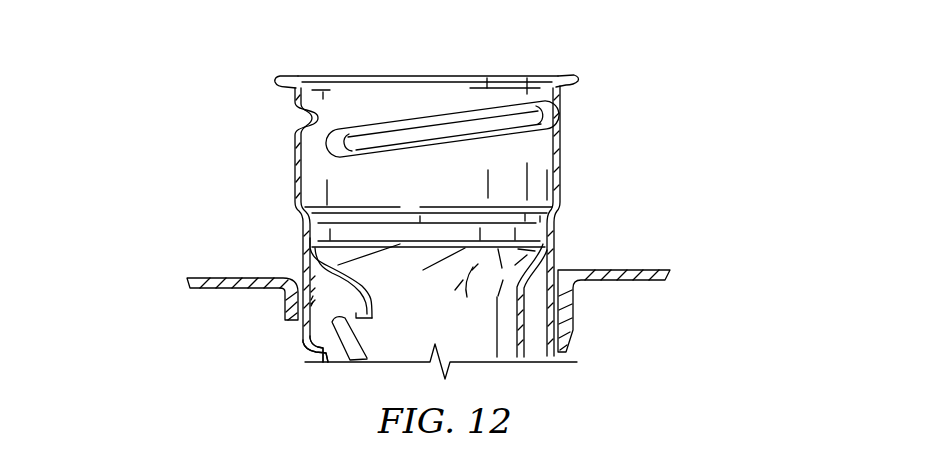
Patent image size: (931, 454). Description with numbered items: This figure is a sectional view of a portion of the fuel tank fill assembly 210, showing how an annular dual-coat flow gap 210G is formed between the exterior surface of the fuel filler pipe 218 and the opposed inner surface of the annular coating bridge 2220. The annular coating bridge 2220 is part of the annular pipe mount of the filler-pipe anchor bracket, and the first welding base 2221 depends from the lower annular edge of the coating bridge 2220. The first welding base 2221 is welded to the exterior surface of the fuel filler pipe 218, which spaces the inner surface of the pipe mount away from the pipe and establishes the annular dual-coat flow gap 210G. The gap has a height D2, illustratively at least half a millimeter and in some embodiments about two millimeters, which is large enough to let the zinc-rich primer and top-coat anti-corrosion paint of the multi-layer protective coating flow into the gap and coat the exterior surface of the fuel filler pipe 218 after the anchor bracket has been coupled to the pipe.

The fuel tank fill assembly 210 is at (617, 191).
The annular dual-coat flow gap 210G is at (225, 220).
The annular coating bridge 2220 is at (162, 375).
The first welding base 2221 is at (707, 298).
The fuel filler pipe 218 is at (295, 349).
The distance of annular dual-coat flow gap D2 is at (277, 302).